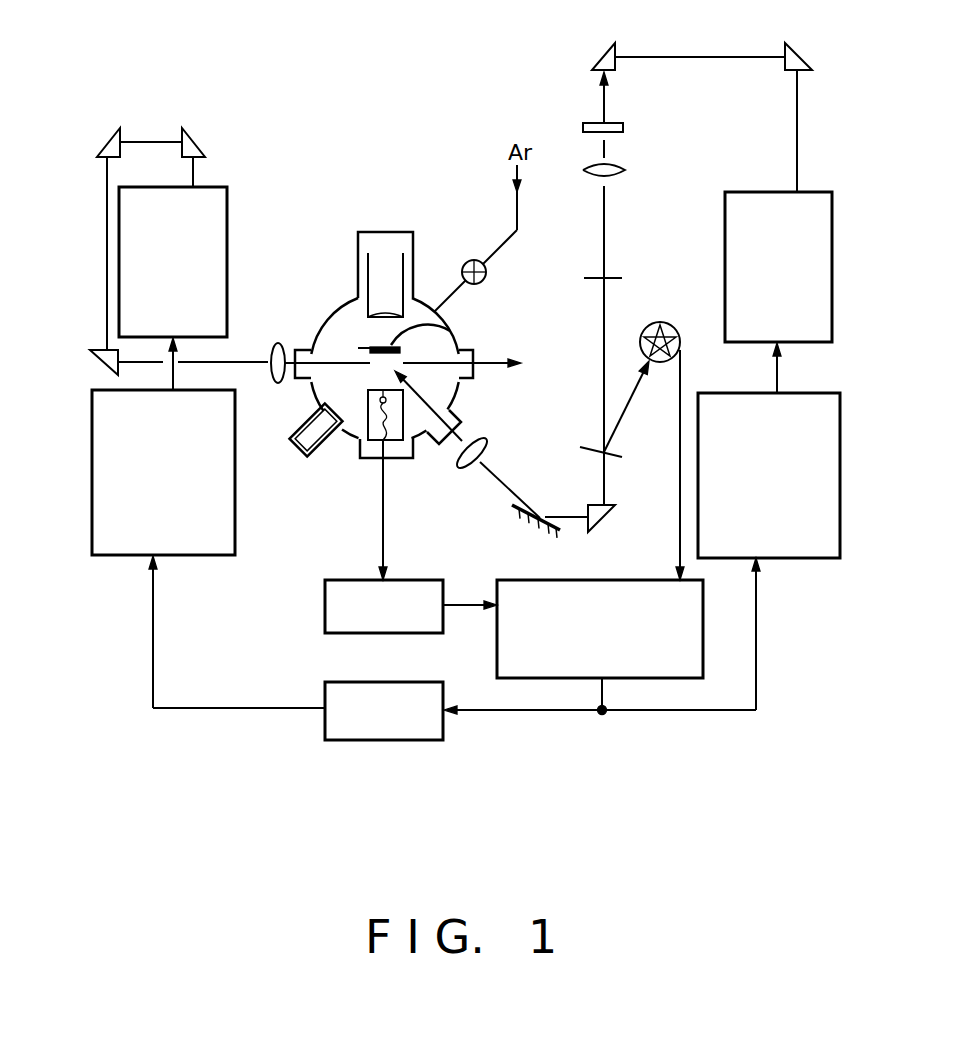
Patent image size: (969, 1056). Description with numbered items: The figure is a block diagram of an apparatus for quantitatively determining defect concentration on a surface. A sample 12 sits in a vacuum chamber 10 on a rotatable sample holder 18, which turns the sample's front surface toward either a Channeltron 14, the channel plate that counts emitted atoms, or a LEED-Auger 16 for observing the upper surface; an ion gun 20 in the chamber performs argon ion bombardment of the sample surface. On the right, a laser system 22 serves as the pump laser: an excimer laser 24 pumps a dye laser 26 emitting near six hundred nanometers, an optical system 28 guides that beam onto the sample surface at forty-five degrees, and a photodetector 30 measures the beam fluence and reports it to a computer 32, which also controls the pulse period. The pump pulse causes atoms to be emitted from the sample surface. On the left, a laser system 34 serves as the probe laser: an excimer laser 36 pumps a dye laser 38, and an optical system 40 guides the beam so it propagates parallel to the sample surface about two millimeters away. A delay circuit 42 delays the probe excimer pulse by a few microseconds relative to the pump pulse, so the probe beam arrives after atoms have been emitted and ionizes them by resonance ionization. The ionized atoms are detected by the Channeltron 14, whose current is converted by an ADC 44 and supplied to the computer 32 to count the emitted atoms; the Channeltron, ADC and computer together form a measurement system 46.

The vacuum chamber 10 is at (331, 305).
The sample 12 is at (400, 352).
The Channeltron 14 is at (355, 430).
The LEED-Auger 16 is at (413, 262).
The sample holder 18 is at (445, 328).
The ion gun 20 is at (296, 452).
The laser system 22 is at (827, 128).
The excimer laser 24 is at (840, 533).
The dye laser 26 is at (832, 322).
The optical system 28 is at (703, 60).
The photodetector 30 is at (670, 362).
The computer 32 is at (703, 662).
The laser system 34 is at (88, 212).
The excimer laser 36 is at (92, 520).
The dye laser 38 is at (119, 297).
The optical system 40 is at (205, 150).
The delay circuit 42 is at (407, 740).
The ADC 44 is at (325, 622).
The measurement system 46 is at (305, 548).